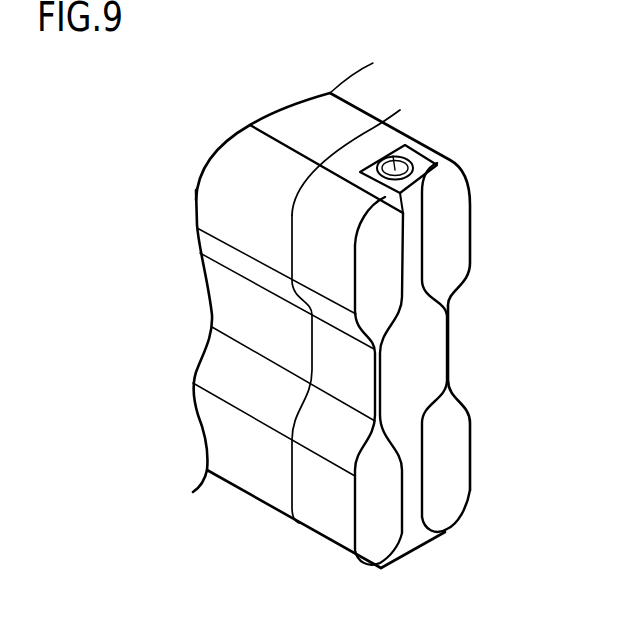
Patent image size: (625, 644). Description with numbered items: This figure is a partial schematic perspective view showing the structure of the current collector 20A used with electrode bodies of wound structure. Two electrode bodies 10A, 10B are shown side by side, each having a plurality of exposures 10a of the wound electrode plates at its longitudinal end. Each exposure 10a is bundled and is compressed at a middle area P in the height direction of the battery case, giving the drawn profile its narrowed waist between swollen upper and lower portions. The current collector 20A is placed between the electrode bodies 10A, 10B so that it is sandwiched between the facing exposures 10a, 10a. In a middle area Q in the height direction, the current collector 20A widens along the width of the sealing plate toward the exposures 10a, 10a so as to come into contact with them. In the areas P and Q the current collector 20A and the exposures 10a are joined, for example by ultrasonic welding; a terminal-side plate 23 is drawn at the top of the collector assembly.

The electrode body 10A is at (257, 230).
The electrode body 10B is at (342, 122).
The exposure 10a is at (311, 221).
The terminal plate 23 is at (394, 157).
The current collector 20A is at (413, 238).
The middle area P is at (452, 335).
The middle area Q is at (423, 360).